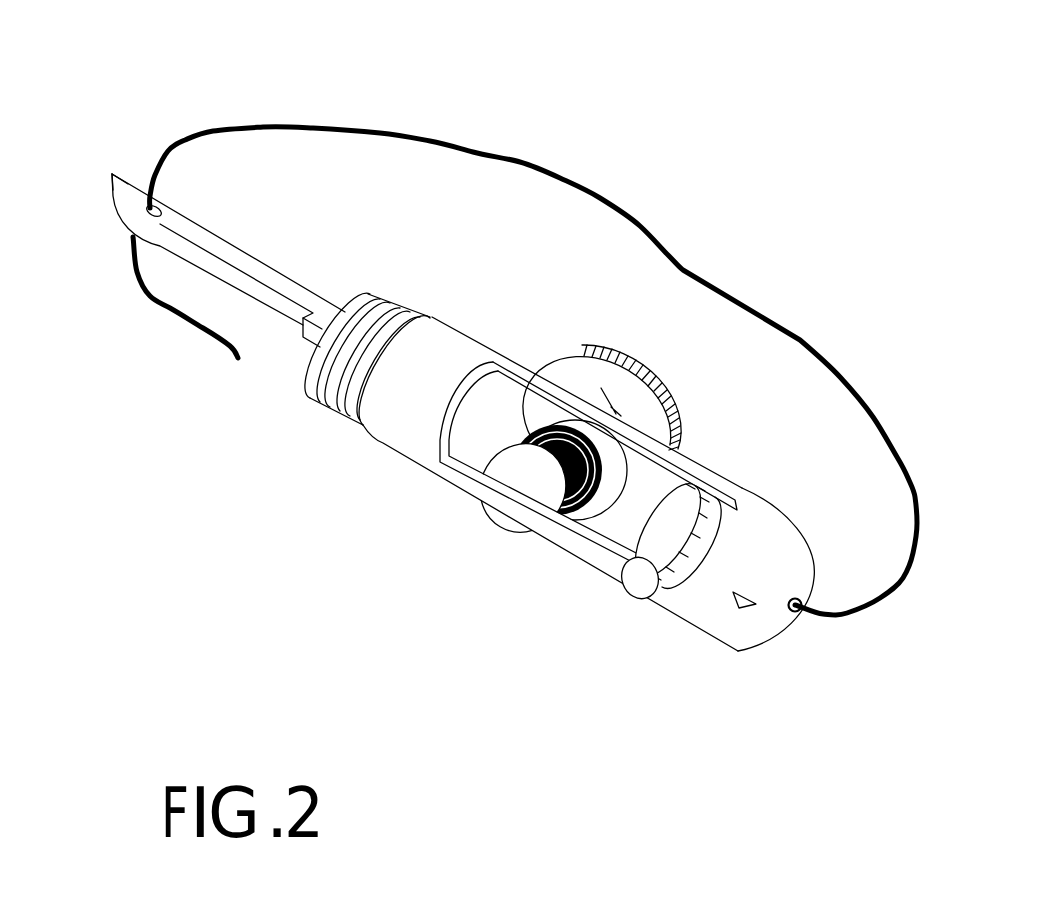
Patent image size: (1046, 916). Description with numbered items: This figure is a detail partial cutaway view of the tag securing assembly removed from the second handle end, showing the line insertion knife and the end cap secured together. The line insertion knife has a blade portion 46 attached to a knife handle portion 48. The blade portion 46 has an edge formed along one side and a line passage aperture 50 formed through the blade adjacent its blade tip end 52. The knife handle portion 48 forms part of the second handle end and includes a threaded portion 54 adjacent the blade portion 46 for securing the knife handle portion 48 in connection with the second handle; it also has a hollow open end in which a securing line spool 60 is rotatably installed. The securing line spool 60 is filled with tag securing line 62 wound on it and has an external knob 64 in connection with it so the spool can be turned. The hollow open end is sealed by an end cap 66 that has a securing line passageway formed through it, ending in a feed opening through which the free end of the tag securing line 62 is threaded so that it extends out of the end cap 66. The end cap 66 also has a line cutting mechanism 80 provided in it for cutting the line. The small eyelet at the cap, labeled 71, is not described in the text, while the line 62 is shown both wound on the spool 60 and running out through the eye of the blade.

The blade portion 46 is at (242, 260).
The knife handle portion 48 is at (200, 271).
The line passage aperture 50 is at (147, 204).
The blade tip end 52 is at (112, 176).
The threaded portion 54 is at (358, 300).
The securing line spool 60 is at (517, 477).
The tag securing line 62 is at (473, 153).
The external knob 64 is at (628, 365).
The end cap 66 is at (797, 557).
The thread guide eyelet 71 is at (795, 613).
The line cutting mechanism 80 is at (643, 583).